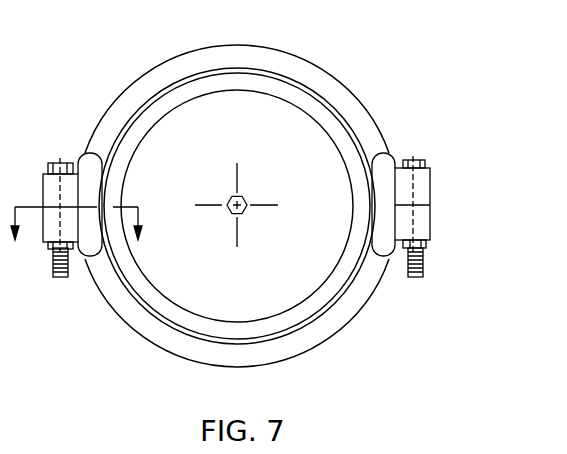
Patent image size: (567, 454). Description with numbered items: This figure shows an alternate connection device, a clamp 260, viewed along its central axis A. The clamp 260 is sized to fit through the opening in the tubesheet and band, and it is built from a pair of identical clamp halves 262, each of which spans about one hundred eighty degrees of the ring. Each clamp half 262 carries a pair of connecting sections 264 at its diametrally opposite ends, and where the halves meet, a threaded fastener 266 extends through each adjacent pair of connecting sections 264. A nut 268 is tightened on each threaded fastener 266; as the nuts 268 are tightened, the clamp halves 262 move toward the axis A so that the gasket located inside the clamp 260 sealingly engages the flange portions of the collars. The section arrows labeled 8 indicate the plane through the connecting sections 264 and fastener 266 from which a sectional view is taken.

The clamp 260 is at (352, 70).
The clamp half 262 is at (259, 210).
The connecting section 264 is at (53, 190).
The threaded fastener 266 is at (68, 274).
The nut 268 is at (50, 253).
The section line 8 is at (76, 236).
The axis A is at (240, 198).